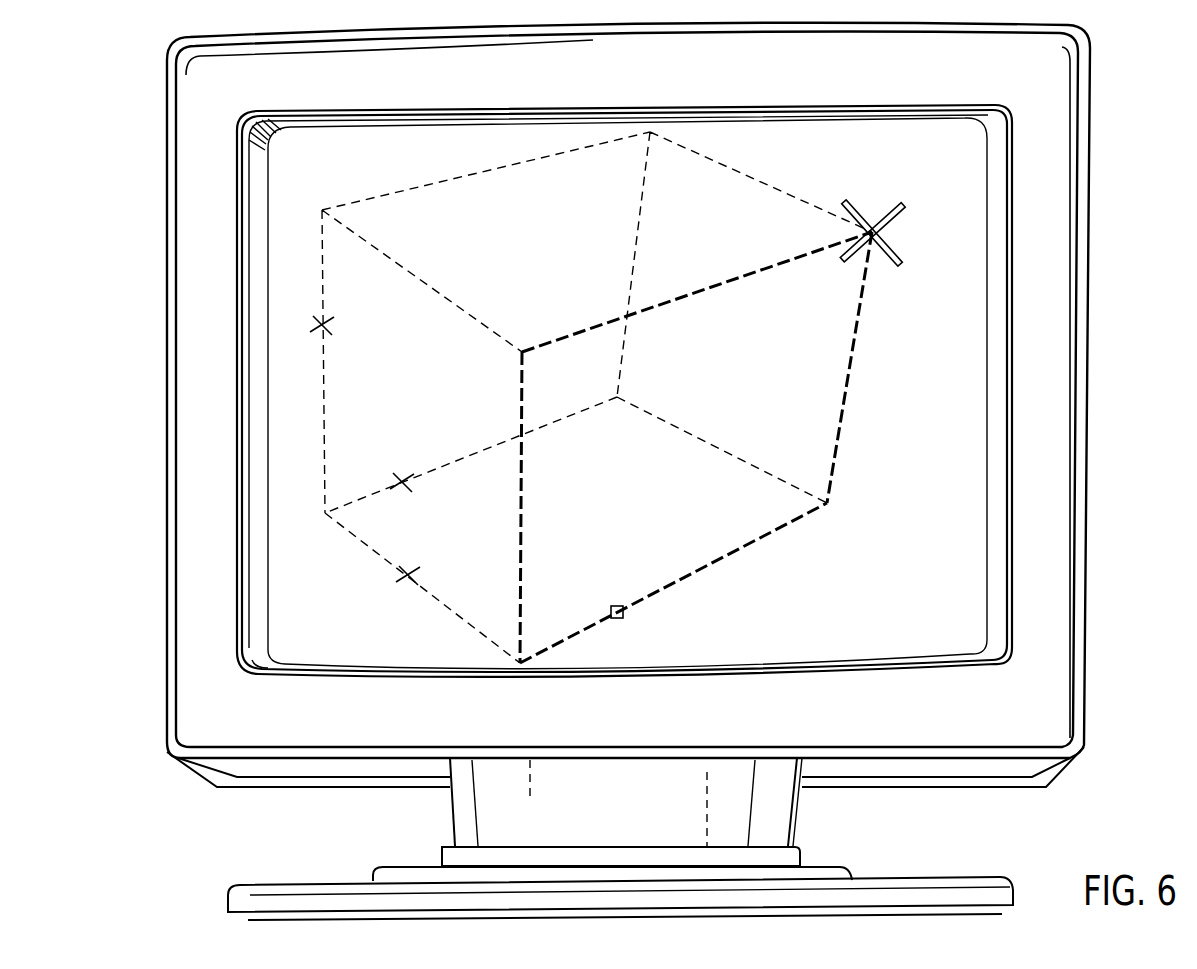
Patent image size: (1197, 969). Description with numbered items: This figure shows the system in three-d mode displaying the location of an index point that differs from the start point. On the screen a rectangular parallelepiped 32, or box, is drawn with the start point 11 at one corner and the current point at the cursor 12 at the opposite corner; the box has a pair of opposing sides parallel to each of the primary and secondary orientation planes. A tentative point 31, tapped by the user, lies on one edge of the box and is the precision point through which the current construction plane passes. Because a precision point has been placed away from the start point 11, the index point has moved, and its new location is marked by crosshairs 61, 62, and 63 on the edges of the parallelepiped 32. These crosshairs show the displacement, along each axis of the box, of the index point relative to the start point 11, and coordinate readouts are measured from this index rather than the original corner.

The start point 11 is at (324, 516).
The cursor 12 is at (897, 206).
The tentative point 31 is at (618, 605).
The rectangular parallelepiped 32 is at (848, 392).
The crosshair 61 is at (408, 579).
The crosshair 62 is at (406, 486).
The crosshair 63 is at (326, 328).